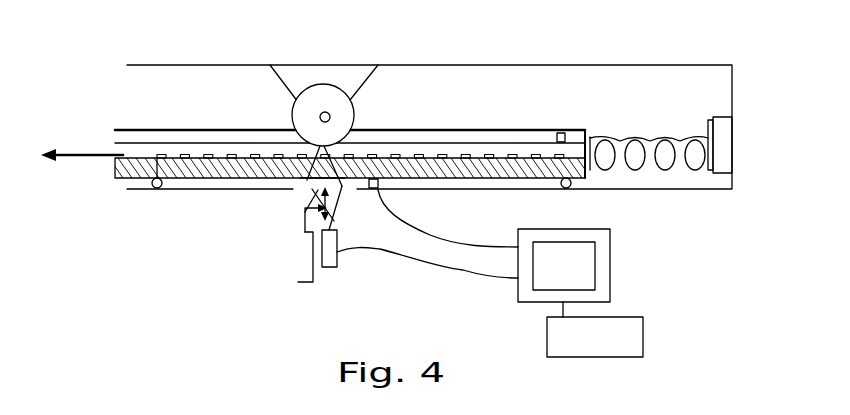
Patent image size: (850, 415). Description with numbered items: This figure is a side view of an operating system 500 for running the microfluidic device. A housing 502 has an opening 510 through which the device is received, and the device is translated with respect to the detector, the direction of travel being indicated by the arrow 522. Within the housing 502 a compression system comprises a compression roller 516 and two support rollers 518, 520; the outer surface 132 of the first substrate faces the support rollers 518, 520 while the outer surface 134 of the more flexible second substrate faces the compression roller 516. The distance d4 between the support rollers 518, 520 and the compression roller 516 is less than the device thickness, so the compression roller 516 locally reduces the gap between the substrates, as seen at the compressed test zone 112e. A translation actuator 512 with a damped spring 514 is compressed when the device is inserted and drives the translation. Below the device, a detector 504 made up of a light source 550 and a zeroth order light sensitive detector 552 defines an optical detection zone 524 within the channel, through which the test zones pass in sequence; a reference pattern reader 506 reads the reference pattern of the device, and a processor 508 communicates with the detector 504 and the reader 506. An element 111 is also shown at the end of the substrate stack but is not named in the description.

The operating system 500 is at (746, 40).
The housing 502 is at (742, 90).
The opening 510 is at (135, 90).
The substrate travel direction 522 is at (76, 153).
The distance between support rollers and compression roller d4 is at (156, 160).
The compression roller 516 is at (303, 118).
The optical detection zone 524 is at (356, 145).
The outer surface of second substrate 134 is at (415, 130).
The nozzle 111 is at (561, 132).
The outer surface of first substrate 132 is at (203, 183).
The test zone 112e is at (308, 186).
The support roller 518 is at (153, 187).
The reference pattern reader 506 is at (385, 188).
The support roller 520 is at (571, 186).
The translation actuator 512 is at (639, 184).
The damped spring 514 is at (665, 170).
The processor 508 is at (648, 273).
The detector 504 is at (299, 244).
The light source 550 is at (305, 284).
The light sensitive detector 552 is at (335, 268).